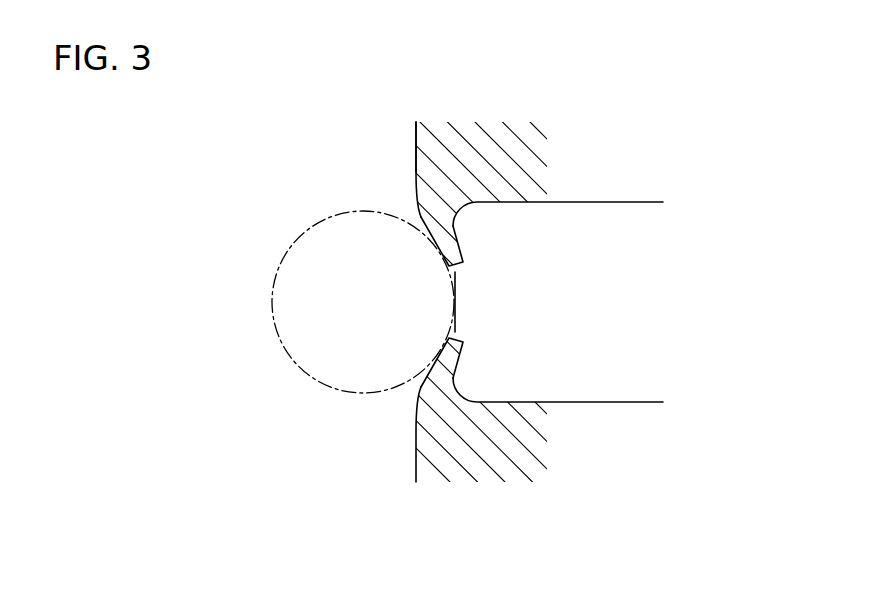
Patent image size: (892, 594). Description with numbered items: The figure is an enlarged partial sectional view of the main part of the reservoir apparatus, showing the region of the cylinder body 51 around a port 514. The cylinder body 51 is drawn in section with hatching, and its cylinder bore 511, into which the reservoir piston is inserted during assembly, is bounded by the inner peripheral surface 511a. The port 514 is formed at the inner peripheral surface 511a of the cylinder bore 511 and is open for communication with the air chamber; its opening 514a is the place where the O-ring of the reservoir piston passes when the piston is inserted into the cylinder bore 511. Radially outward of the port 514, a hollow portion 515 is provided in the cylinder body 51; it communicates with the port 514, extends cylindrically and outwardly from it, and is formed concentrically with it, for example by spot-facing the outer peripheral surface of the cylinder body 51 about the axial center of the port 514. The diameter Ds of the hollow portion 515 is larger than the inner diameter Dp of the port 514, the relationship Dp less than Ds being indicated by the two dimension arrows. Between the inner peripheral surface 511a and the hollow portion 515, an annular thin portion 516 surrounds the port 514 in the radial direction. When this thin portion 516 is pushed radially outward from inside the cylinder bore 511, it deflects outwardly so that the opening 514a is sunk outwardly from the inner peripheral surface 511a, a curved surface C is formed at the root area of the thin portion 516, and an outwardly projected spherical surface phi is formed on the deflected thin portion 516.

The cylinder body 51 is at (433, 478).
The cylinder bore 511 is at (416, 470).
The inner peripheral surface of the cylinder bore 511a is at (415, 133).
The port 514 is at (455, 327).
The opening of the port 514a is at (453, 278).
The hollow portion 515 is at (513, 402).
The annular thin portion 516 is at (452, 266).
The curved surface C is at (417, 214).
The spherical surface phi is at (437, 347).
The inner diameter of the port Dp is at (455, 272).
The diameter of the hollow portion Ds is at (654, 202).